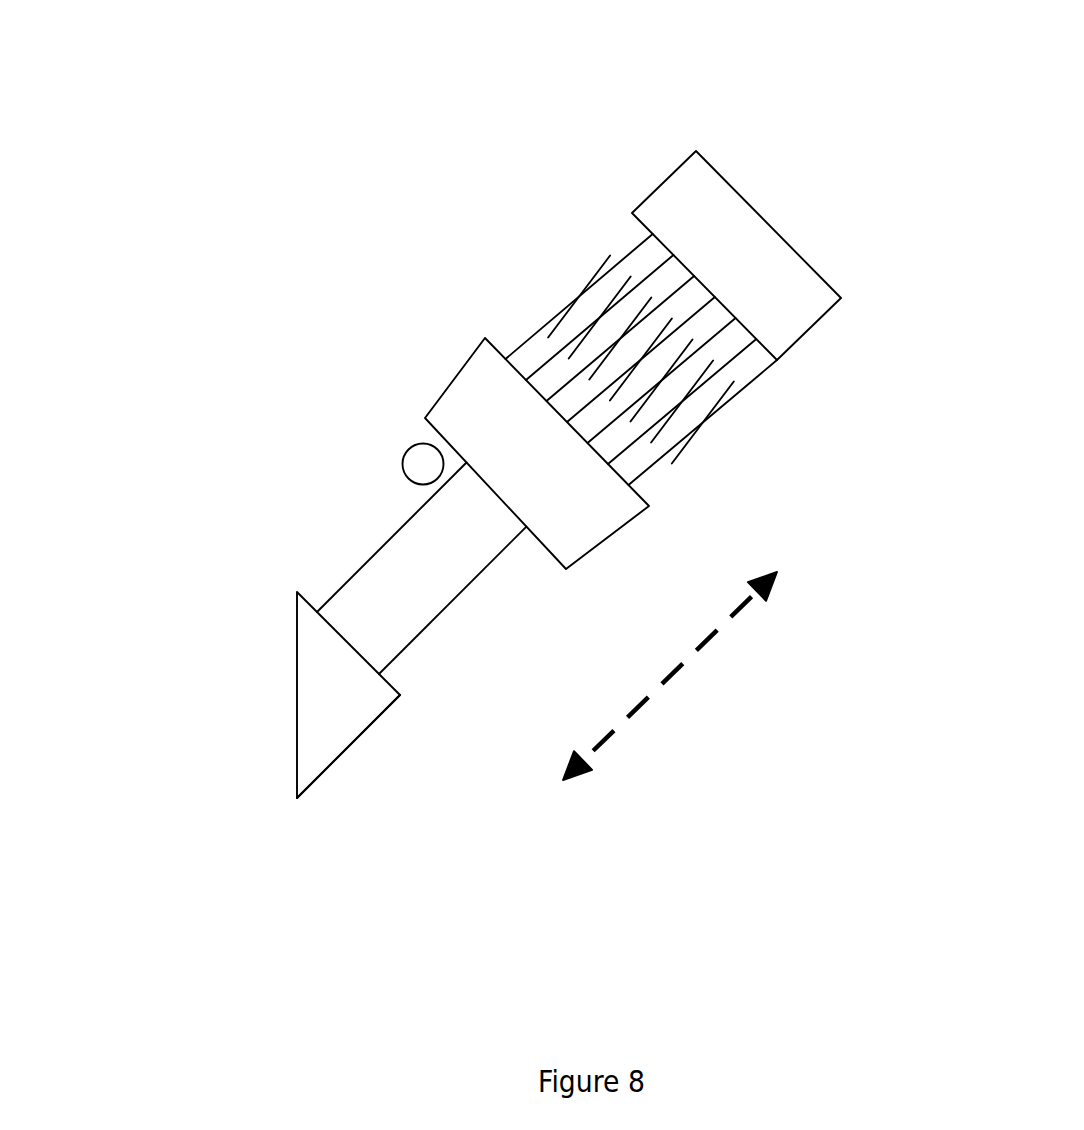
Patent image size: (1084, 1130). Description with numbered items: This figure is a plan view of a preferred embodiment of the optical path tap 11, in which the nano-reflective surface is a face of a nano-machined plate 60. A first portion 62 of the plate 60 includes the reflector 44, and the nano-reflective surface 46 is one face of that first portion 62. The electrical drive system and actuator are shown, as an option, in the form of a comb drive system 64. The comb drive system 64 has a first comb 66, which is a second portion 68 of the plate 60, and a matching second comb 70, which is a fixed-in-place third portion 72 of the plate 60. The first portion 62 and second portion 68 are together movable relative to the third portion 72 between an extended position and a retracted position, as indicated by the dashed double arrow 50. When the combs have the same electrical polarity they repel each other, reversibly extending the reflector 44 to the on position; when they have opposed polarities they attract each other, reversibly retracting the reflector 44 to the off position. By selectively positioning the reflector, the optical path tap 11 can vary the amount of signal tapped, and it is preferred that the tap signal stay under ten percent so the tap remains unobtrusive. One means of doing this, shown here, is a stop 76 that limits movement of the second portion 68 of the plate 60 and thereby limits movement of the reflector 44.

The optical path tap 11 is at (864, 104).
The reflector 44 is at (337, 740).
The nano-reflective surface 46 is at (297, 652).
The dashed double arrow 50 is at (673, 677).
The nano-machined plate 60 is at (151, 163).
The first portion 62 is at (359, 674).
The comb drive system 64 is at (864, 391).
The first comb 66 is at (676, 452).
The second portion 68 is at (547, 422).
The second comb 70 is at (630, 338).
The third portion 72 is at (715, 257).
The stop 76 is at (423, 464).